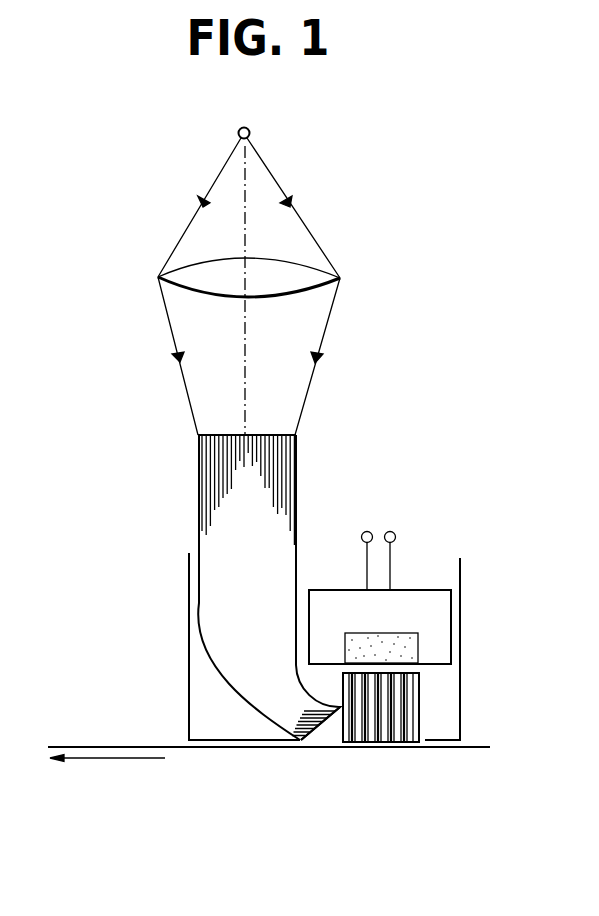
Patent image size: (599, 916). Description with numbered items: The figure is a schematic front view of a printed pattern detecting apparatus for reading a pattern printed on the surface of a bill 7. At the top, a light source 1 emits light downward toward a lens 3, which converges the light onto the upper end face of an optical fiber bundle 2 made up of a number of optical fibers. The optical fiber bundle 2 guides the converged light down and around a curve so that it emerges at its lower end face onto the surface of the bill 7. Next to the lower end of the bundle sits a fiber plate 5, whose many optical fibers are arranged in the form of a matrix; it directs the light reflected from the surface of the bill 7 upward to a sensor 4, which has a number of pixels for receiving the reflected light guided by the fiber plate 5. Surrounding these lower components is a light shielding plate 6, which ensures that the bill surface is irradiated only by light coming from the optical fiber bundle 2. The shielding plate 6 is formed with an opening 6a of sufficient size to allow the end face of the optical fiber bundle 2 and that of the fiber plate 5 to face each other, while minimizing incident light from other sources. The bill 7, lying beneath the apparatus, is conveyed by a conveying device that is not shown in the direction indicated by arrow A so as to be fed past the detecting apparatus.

The light source 1 is at (250, 134).
The optical fiber bundle 2 is at (297, 483).
The lens 3 is at (300, 263).
The sensor 4 is at (420, 588).
The fiber plate 5 is at (420, 708).
The light shielding plate 6 is at (188, 595).
The opening 6a is at (330, 732).
The bill 7 is at (242, 748).
The arrow A is at (140, 758).